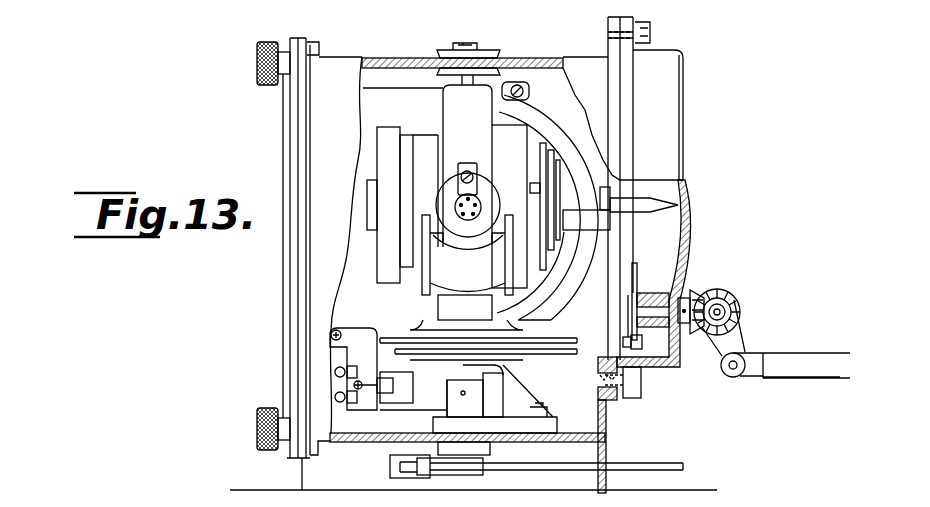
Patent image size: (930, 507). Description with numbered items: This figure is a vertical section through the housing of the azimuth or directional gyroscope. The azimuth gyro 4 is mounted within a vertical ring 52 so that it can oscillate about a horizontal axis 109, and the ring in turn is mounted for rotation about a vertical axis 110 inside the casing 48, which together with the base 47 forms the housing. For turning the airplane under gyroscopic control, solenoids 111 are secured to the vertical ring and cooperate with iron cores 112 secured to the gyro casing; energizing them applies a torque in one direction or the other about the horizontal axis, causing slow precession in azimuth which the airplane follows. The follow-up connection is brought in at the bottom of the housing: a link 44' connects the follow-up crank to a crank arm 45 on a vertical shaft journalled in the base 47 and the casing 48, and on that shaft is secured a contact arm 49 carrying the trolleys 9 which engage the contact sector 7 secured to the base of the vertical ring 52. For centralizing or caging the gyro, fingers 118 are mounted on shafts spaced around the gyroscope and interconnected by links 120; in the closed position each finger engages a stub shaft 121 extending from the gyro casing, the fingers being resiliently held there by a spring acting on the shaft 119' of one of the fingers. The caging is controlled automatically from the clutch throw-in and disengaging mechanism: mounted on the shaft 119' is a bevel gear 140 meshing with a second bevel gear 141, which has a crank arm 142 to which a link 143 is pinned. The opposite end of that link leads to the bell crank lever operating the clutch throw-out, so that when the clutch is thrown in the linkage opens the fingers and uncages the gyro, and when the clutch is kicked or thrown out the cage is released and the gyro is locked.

The casing 48 is at (377, 58).
The vertical axis 110 is at (492, 55).
The azimuth gyro 4 is at (428, 145).
The horizontal axis 109 is at (540, 163).
The solenoids 111 is at (443, 283).
The vertical ring 52 is at (465, 309).
The iron cores 112 is at (520, 245).
The stub shaft 121 is at (693, 205).
The fingers 118 is at (637, 285).
The shaft of one of the fingers 119' is at (684, 273).
The links 120 is at (637, 342).
The second bevel gear 141 is at (735, 300).
The bevel gear 140 is at (696, 340).
The crank arm 142 is at (735, 330).
The link 143 is at (783, 373).
The contact sector 7 is at (395, 378).
The contact arm 49 is at (445, 407).
The trolleys 9 is at (395, 417).
The base 47 is at (560, 433).
The crank arm 45 is at (390, 466).
The link 44' is at (556, 455).